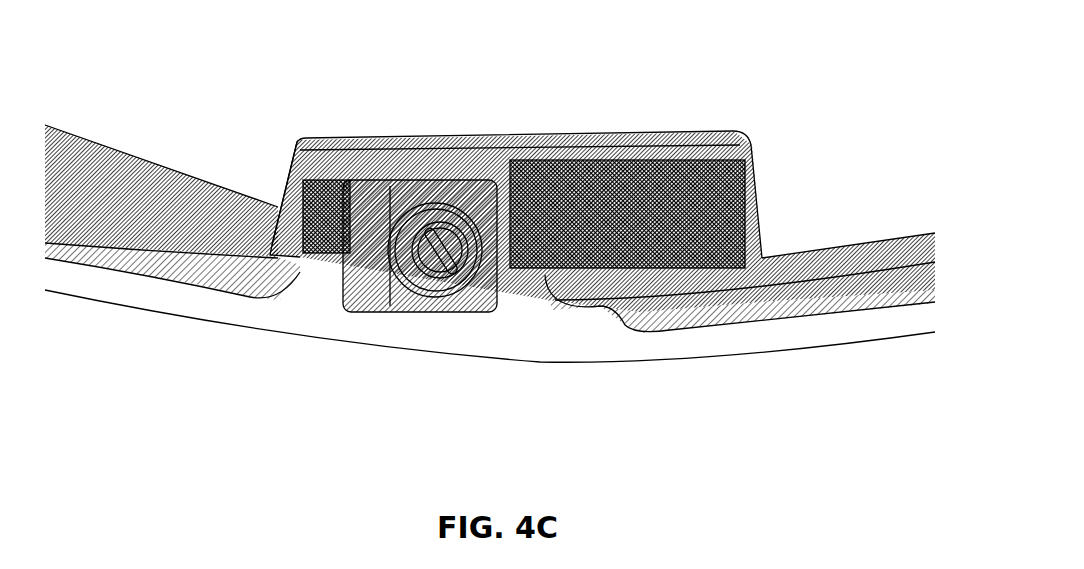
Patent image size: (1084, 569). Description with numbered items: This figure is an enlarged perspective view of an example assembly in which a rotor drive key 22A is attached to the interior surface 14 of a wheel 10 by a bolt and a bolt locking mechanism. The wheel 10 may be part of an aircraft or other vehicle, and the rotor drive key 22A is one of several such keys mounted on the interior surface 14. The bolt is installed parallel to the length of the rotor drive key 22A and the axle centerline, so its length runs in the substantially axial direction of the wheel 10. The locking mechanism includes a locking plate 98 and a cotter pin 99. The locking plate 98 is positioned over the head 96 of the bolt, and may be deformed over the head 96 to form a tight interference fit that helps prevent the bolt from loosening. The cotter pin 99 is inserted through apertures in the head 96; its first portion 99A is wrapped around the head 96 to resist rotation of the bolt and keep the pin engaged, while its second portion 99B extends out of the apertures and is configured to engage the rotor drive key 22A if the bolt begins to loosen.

The wheel 10 is at (293, 323).
The interior surface 14 is at (172, 212).
The rotor drive key 22A is at (428, 168).
The head 96 is at (408, 228).
The locking plate 98 is at (505, 290).
The cotter pin 99 is at (443, 262).
The first portion 99A is at (395, 262).
The second portion 99B is at (310, 138).